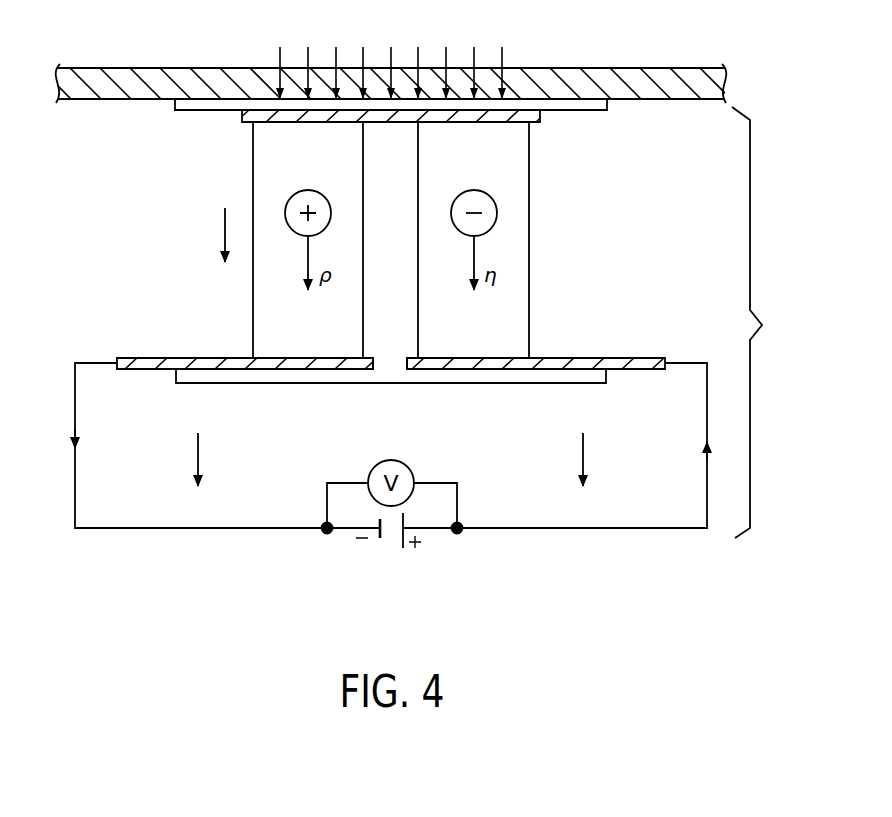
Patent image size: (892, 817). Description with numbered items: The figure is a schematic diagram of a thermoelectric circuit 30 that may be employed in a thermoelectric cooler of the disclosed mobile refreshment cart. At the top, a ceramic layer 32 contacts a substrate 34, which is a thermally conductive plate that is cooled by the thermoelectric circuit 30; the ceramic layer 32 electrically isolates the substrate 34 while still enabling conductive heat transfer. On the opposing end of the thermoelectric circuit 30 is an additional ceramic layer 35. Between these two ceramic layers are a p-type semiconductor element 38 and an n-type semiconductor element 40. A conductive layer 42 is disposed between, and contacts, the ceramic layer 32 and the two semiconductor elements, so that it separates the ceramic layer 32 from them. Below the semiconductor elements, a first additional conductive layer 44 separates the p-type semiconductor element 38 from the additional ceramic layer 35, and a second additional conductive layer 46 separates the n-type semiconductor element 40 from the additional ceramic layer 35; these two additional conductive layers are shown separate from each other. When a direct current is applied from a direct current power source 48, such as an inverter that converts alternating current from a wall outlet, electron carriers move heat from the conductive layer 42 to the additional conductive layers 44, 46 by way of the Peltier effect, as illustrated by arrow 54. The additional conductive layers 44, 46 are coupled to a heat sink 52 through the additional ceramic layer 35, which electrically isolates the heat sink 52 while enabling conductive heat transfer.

The thermoelectric circuit 30 is at (763, 322).
The ceramic layer 32 is at (607, 103).
The substrate 34 is at (643, 80).
The additional ceramic layer 35 is at (606, 372).
The p-type semiconductor element 38 is at (364, 200).
The n-type semiconductor element 40 is at (418, 238).
The conductive layer 42 is at (540, 114).
The first additional conductive layer 44 is at (373, 358).
The second additional conductive layer 46 is at (612, 358).
The direct current power source 48 is at (383, 543).
The heat sink 52 is at (137, 507).
The arrow 54 is at (224, 229).